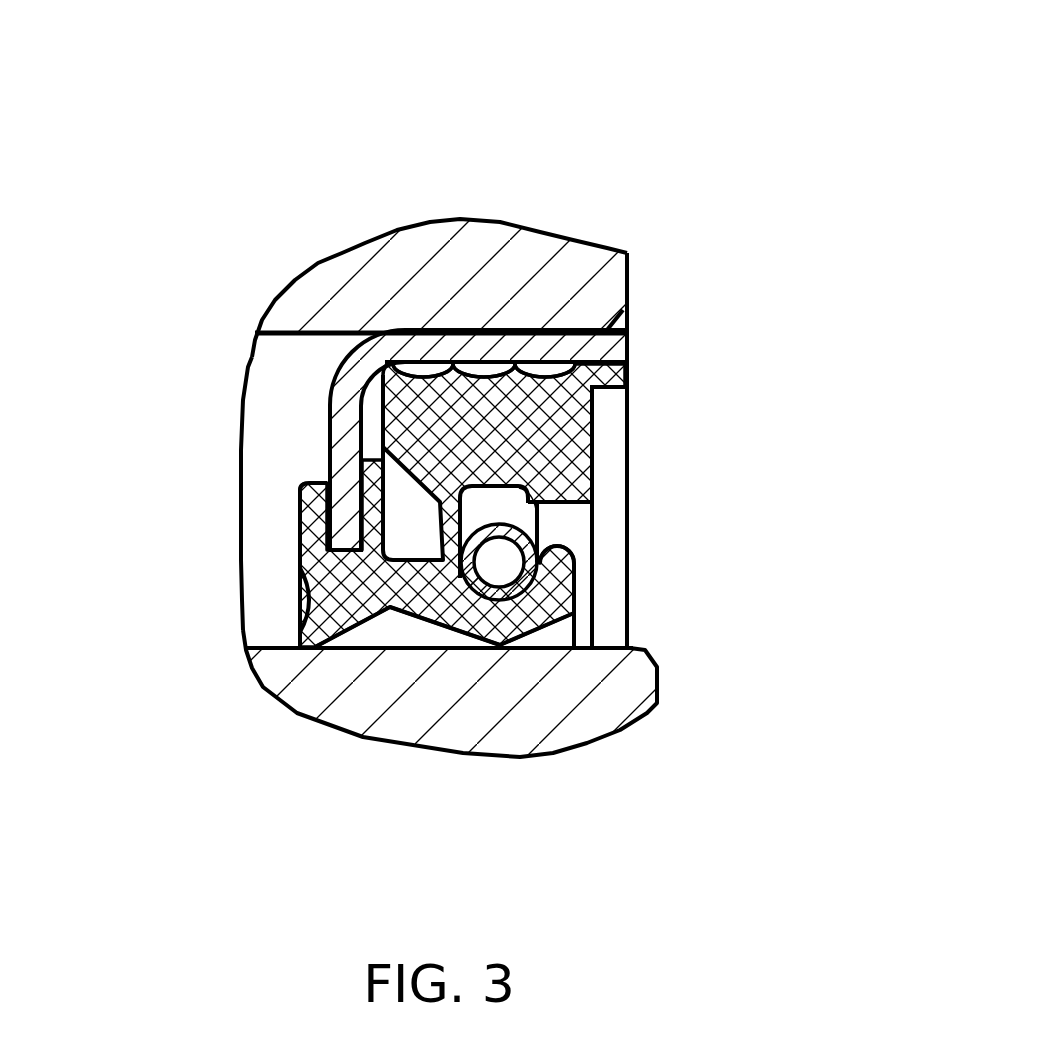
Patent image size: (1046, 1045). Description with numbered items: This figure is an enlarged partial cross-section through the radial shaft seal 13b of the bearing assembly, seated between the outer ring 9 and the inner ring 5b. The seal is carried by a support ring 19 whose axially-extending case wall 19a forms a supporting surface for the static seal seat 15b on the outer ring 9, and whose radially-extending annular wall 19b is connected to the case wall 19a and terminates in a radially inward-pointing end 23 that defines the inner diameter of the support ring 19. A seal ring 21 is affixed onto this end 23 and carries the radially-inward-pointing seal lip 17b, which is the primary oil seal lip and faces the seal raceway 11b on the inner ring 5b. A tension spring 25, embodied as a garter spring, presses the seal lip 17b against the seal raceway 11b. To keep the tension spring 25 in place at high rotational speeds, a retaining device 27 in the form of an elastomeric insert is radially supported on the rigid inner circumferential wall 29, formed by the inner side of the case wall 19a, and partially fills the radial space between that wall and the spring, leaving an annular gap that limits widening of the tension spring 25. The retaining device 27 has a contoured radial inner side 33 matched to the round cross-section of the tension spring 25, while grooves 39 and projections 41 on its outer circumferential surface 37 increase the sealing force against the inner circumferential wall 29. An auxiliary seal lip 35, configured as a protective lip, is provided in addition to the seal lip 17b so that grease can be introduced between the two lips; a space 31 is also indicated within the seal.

The inner ring 5b is at (535, 703).
The outer ring 9 is at (487, 280).
The seal raceway 11b is at (272, 662).
The radial shaft seal 13b is at (662, 206).
The seal seat 15b is at (260, 345).
The seal lip 17b is at (520, 652).
The support ring 19 is at (338, 362).
The case wall 19a is at (397, 338).
The annular wall 19b is at (340, 443).
The seal ring 21 is at (403, 593).
The end 23 is at (335, 524).
The tension spring 25 is at (574, 592).
The retaining device 27 is at (560, 447).
The inner circumferential wall 29 is at (627, 368).
The space 31 is at (370, 415).
The radial inner side 33 is at (540, 523).
The auxiliary seal lip 35 is at (300, 655).
The outer circumferential surface 37 is at (596, 383).
The grooves 39 is at (548, 372).
The projections 41 is at (523, 363).